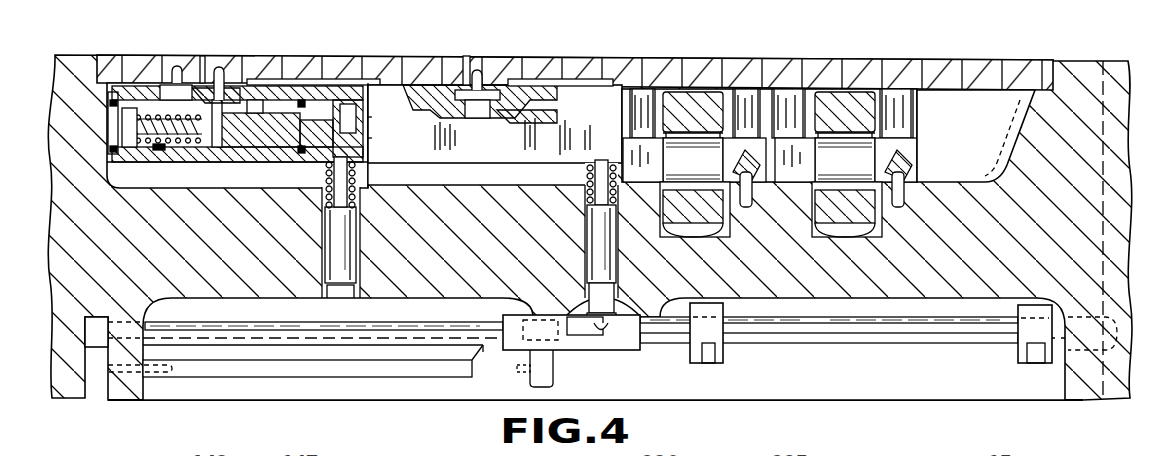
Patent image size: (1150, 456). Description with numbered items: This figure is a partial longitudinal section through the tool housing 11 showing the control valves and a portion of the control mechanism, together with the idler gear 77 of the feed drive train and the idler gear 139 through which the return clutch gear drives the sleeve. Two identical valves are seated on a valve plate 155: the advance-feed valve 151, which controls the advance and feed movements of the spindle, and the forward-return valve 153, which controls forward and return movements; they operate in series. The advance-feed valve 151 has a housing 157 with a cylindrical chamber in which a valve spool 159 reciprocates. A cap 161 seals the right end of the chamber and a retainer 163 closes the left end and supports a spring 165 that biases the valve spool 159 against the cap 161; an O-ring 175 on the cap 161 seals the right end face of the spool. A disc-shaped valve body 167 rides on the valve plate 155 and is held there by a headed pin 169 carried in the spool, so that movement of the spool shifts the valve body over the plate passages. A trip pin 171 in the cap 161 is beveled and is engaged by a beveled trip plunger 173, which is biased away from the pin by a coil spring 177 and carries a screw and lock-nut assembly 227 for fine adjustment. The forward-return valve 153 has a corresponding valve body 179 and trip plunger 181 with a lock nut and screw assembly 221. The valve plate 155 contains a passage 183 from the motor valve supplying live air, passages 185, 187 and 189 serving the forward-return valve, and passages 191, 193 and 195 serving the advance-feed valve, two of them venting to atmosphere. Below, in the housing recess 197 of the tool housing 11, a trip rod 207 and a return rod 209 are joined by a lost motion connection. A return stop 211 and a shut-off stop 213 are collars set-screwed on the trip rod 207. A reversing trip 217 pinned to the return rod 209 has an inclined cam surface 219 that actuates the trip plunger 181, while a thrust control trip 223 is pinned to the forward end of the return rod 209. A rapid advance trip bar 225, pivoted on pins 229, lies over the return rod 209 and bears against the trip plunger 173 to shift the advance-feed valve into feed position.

The housing body 11 is at (1001, 246).
The idler gear 77 is at (850, 118).
The idler gear 139 is at (698, 118).
The advance-feed valve 151 is at (102, 150).
The forward-return valve 153 is at (465, 156).
The valve plate 155 is at (292, 66).
The housing 157 is at (140, 150).
The valve spool 159 is at (272, 147).
The cap 161 is at (370, 117).
The retainer 163 is at (120, 125).
The spring 165 is at (150, 151).
The valve body 167 is at (236, 80).
The headed pin 169 is at (212, 150).
The trip pin 171 is at (370, 137).
The trip plunger 173 is at (345, 232).
The O-ring 175 is at (312, 160).
The coil spring 177 is at (357, 182).
The valve body 179 is at (478, 95).
The trip plunger 181 is at (588, 230).
The passage 183 is at (580, 80).
The passage 185 is at (505, 88).
The passage 187 is at (462, 68).
The passage 189 is at (352, 79).
The passage 191 is at (218, 66).
The passage 193 is at (200, 60).
The passage 195 is at (172, 68).
The housing recess 197 is at (917, 392).
The trip rod 207 is at (830, 335).
The return rod 209 is at (203, 325).
The return stop 211 is at (723, 345).
The shut-off stop 213 is at (1027, 342).
The reversing trip 217 is at (580, 342).
The inclined cam surface 219 is at (612, 335).
The lock nut and screw assembly 221 is at (615, 302).
The thrust control trip 223 is at (97, 338).
The rapid advance trip bar 225 is at (327, 372).
The screw and lock-nut assembly 227 is at (360, 311).
The pins 229 is at (528, 372).